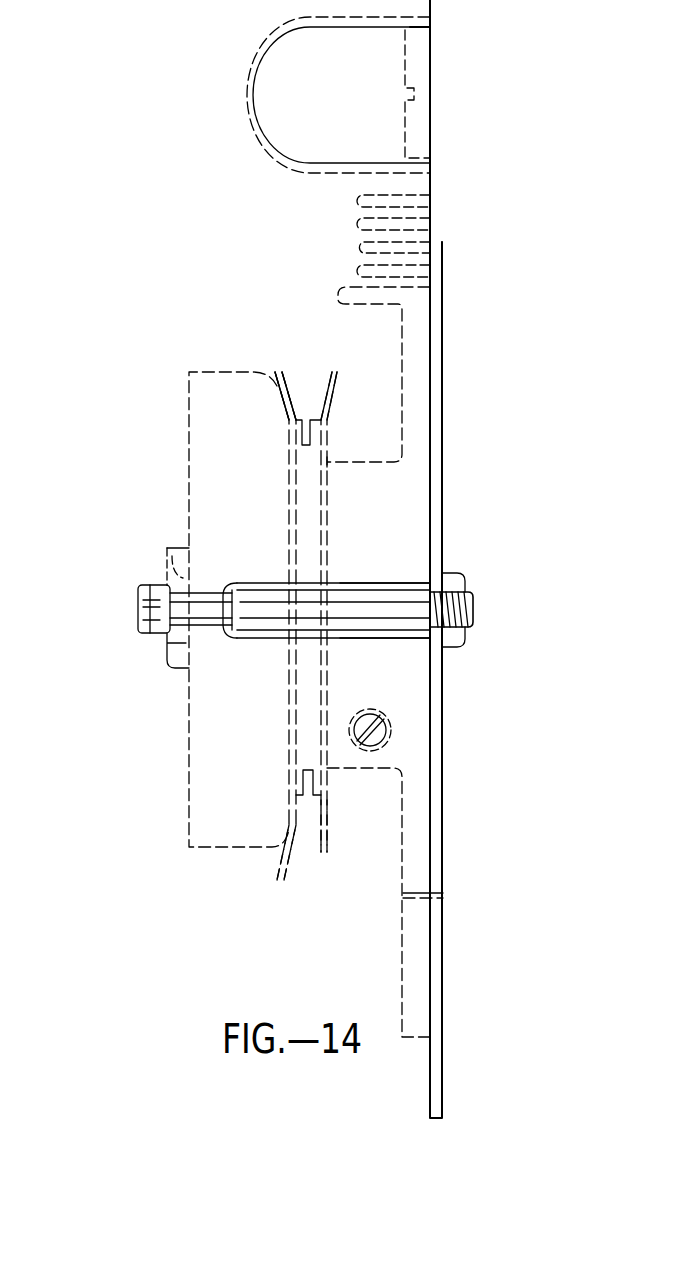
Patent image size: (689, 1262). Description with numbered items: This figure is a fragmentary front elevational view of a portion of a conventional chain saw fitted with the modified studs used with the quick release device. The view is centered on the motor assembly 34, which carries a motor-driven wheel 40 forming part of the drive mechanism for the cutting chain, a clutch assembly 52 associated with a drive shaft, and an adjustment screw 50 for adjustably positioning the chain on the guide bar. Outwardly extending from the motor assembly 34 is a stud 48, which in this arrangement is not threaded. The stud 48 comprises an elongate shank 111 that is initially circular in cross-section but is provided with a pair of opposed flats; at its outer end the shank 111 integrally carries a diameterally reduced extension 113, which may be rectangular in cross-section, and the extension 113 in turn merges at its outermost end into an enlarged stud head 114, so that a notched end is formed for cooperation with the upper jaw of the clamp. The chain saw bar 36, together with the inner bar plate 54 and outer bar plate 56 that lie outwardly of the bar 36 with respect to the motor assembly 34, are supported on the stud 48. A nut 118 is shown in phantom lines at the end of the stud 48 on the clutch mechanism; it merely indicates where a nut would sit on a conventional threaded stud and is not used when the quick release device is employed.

The motor assembly 34 is at (500, 503).
The motor-driven wheel 40 is at (184, 384).
The clutch assembly 52 is at (268, 373).
The inner bar plate 54 is at (330, 843).
The outer bar plate 56 is at (282, 872).
The chain saw bar 36 is at (313, 720).
The stud 48 is at (244, 650).
The adjustment screw 50 is at (392, 726).
The shank 111 is at (352, 590).
The diameterally reduced extension 113 is at (200, 594).
The stud head 114 is at (137, 600).
The nut 118 is at (167, 548).